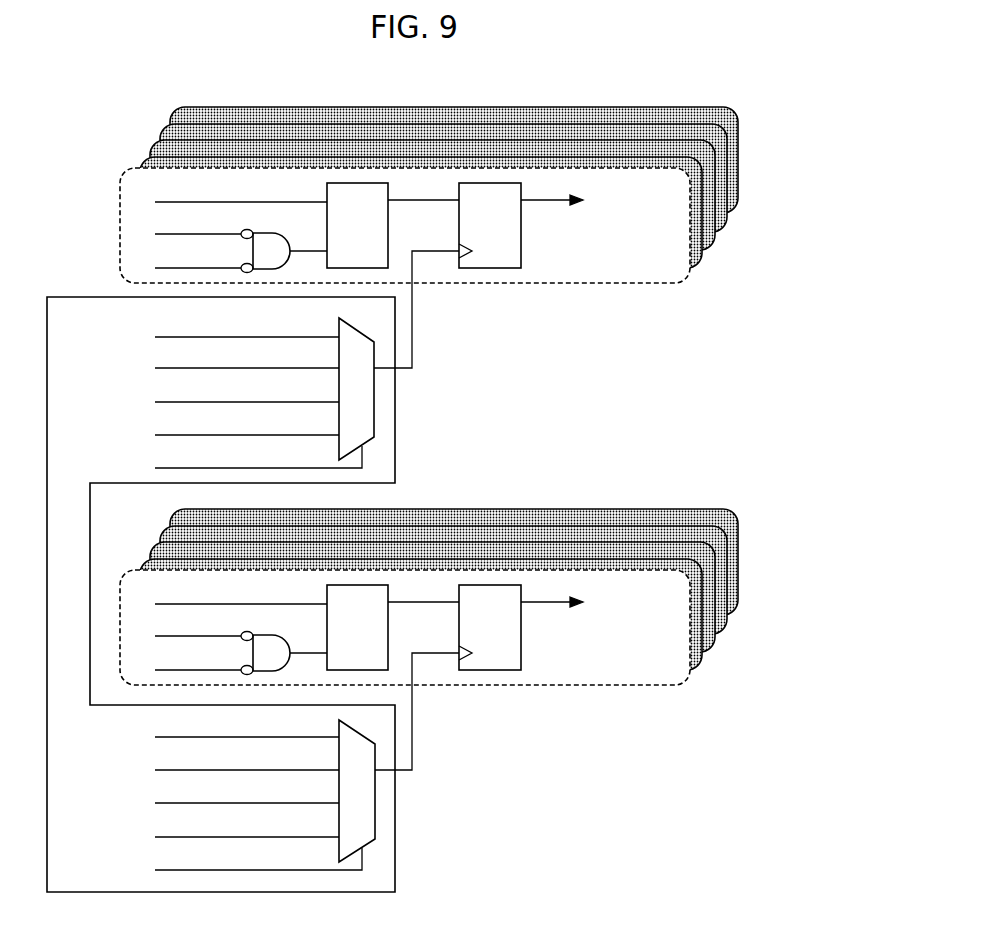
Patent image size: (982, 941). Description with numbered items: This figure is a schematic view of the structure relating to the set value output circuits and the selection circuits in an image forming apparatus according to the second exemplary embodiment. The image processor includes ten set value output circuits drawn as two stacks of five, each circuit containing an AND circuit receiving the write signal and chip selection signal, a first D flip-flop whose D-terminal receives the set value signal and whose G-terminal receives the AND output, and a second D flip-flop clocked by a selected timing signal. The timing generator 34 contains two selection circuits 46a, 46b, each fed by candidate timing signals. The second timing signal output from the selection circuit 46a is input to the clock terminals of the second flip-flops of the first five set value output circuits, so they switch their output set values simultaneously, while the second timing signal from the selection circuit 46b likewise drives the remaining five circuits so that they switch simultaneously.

The timing generator 34 is at (80, 296).
The selection circuit 46a is at (362, 418).
The selection circuit 46b is at (362, 822).